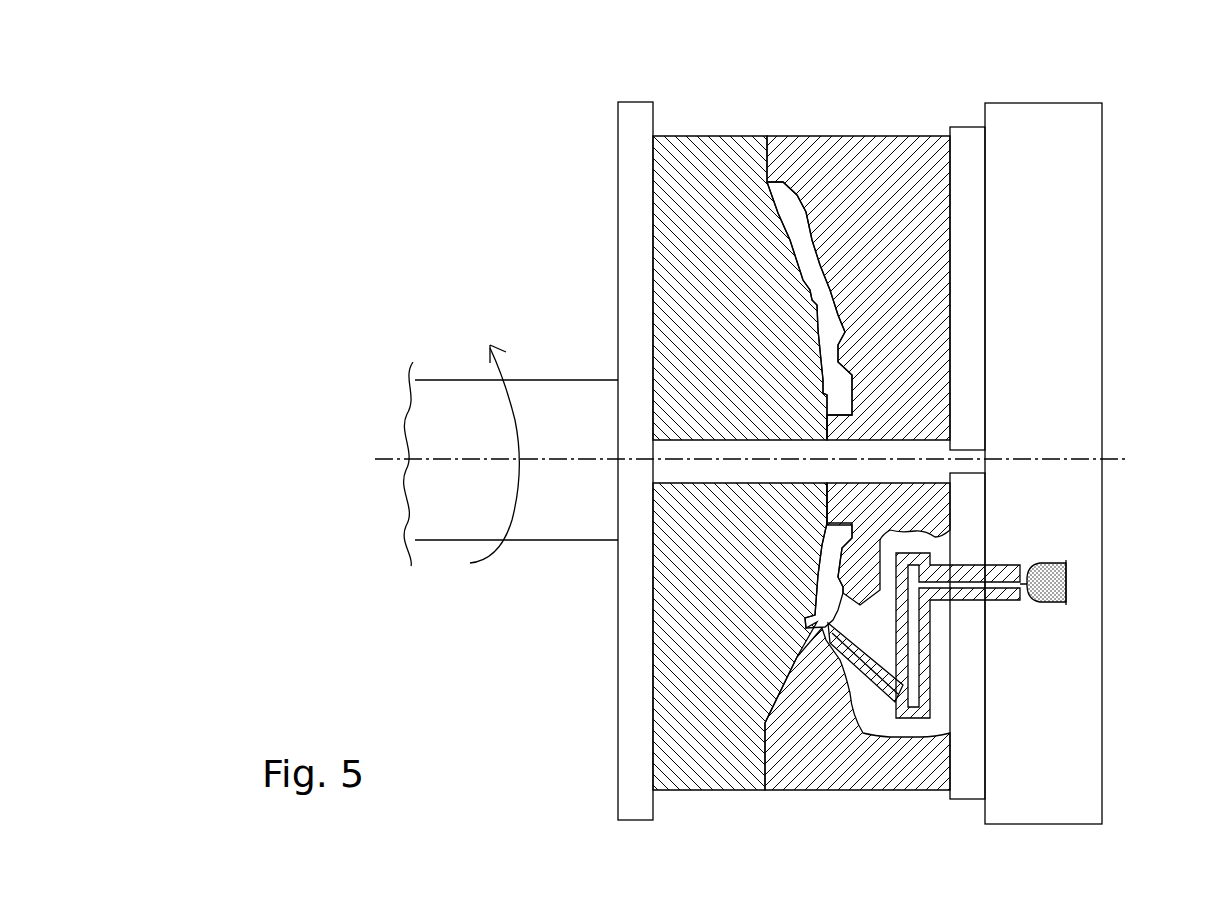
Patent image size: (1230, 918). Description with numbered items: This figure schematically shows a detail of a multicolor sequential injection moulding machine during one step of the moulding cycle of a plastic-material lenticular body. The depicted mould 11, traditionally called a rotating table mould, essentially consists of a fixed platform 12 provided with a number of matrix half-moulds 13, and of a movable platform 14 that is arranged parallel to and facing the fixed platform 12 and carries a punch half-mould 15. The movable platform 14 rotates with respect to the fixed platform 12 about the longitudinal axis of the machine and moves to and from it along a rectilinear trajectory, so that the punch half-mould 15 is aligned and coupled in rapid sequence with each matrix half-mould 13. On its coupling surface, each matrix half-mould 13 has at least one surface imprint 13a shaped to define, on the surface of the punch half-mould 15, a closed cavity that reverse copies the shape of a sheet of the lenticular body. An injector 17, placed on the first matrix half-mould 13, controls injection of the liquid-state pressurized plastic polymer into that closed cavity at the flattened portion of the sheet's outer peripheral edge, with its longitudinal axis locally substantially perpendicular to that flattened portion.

The mould 11 is at (583, 276).
The fixed platform 12 is at (968, 267).
The matrix half-mould 13 is at (880, 150).
The surface imprint 13a is at (800, 206).
The movable platform 14 is at (622, 582).
The punch half-mould 15 is at (745, 625).
The injector 17 is at (863, 630).